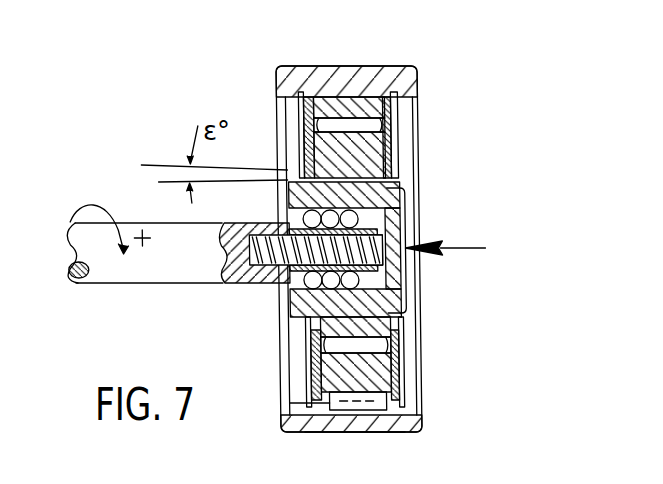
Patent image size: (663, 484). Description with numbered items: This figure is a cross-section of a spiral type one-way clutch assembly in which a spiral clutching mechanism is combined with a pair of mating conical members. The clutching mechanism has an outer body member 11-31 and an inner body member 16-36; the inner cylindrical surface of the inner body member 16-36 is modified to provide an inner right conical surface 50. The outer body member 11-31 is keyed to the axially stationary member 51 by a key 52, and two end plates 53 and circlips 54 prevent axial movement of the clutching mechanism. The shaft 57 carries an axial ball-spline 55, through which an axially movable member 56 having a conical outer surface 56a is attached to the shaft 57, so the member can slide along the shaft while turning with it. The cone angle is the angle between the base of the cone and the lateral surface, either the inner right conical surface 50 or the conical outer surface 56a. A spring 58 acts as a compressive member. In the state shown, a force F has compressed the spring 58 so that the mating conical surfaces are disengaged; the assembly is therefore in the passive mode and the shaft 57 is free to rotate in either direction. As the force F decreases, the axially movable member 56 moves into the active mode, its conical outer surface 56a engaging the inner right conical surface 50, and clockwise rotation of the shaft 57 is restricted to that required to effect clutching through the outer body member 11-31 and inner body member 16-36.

The outer body member 11-31 is at (338, 107).
The inner body member 16-36 is at (327, 146).
The inner right conical surface 50 is at (375, 316).
The axially stationary member 51 is at (370, 423).
The key 52 is at (325, 409).
The end plate 53 is at (393, 353).
The circlip 54 is at (400, 393).
The axial ball-spline 55 is at (365, 213).
The axially movable member 56 is at (398, 187).
The conical outer surface 56a is at (403, 184).
The shaft 57 is at (127, 260).
The spring 58 is at (215, 222).
The force F is at (454, 248).